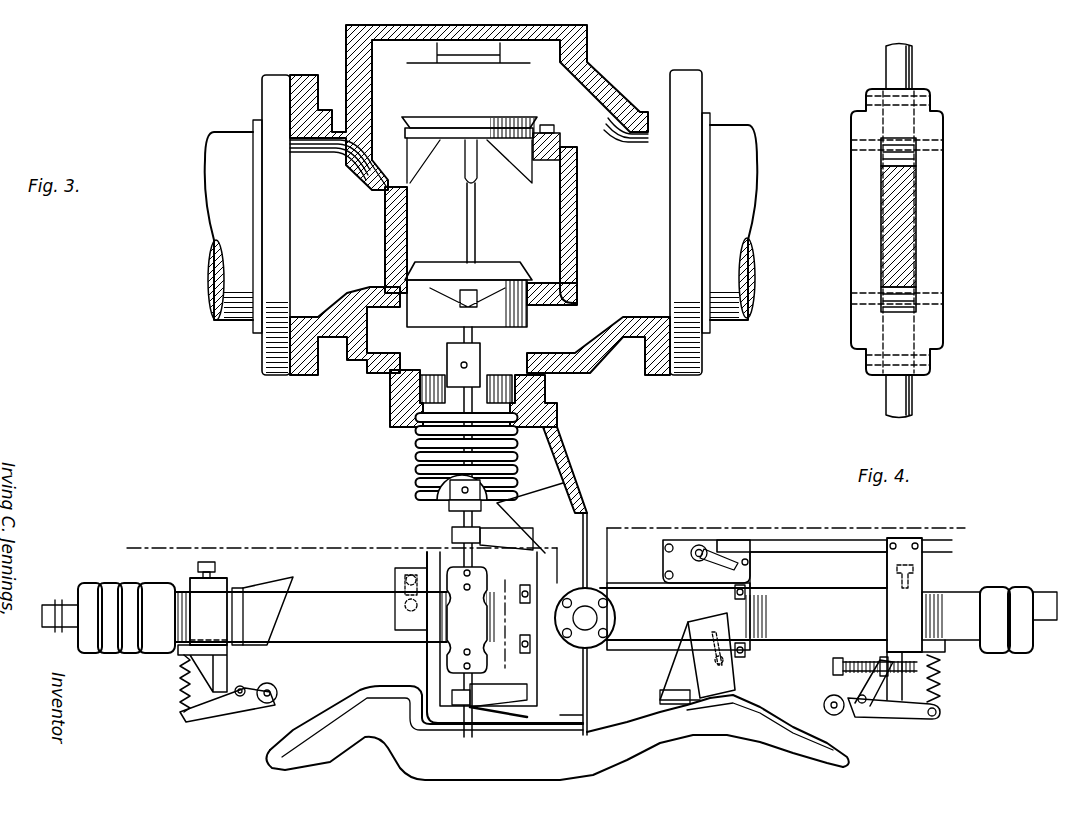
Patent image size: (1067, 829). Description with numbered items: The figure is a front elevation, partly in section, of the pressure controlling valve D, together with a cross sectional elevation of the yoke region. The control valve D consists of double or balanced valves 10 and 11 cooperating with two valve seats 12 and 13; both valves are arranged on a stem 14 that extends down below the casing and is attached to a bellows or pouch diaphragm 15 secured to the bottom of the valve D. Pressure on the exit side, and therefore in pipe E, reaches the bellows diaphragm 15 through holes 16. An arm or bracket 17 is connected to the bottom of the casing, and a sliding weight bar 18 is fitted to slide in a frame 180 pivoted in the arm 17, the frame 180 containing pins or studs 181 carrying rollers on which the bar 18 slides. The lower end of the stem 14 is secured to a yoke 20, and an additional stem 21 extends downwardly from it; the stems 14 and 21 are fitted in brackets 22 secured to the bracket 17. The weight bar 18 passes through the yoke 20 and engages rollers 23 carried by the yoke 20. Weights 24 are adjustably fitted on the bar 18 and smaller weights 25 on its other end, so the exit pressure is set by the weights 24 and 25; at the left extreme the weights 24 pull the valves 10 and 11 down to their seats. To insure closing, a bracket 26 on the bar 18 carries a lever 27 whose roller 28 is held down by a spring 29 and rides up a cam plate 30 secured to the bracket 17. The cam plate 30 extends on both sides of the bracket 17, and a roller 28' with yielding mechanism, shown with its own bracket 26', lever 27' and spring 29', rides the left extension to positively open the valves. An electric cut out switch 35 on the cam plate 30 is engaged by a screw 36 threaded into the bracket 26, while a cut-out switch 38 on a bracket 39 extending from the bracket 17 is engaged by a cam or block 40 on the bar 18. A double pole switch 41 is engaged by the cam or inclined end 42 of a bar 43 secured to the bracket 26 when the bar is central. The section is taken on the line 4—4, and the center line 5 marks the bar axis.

In FIG. 3, the pipe E is at (207, 183).
In FIG. 3, the control valve D is at (546, 334).
In FIG. 3, the valve 10 is at (513, 104).
In FIG. 3, the valve 11 is at (487, 264).
In FIG. 3, the valve seat 12 is at (542, 138).
In FIG. 3, the valve seat 13 is at (550, 285).
In FIG. 3, the stem 14 is at (478, 214).
In FIG. 4, the stem 14 is at (910, 68).
In FIG. 3, the bellows or pouch diaphragm 15 is at (422, 465).
In FIG. 3, the holes 16 is at (430, 392).
In FIG. 3, the arm or bracket 17 is at (560, 458).
In FIG. 3, the sliding weight bar 18 is at (531, 615).
In FIG. 4, the sliding weight bar 18 is at (890, 226).
In FIG. 3, the yoke 20 is at (450, 647).
In FIG. 4, the yoke 20 is at (935, 289).
In FIG. 3, the additional stem 21 is at (462, 733).
In FIG. 4, the additional stem 21 is at (898, 396).
In FIG. 3, the brackets 22 is at (452, 534).
In FIG. 4, the rollers 23 is at (918, 146).
In FIG. 3, the weights 24 is at (123, 644).
In FIG. 3, the smaller weights 25 is at (1003, 640).
In FIG. 3, the bracket 26 is at (933, 619).
In FIG. 3, the left bracket 26' is at (184, 626).
In FIG. 3, the lever 27 is at (894, 702).
In FIG. 3, the left lever 27' is at (203, 717).
In FIG. 3, the roller 28 is at (841, 716).
In FIG. 3, the roller 28' is at (274, 682).
In FIG. 3, the spring 29 is at (954, 678).
In FIG. 3, the left spring 29' is at (154, 683).
In FIG. 3, the cam plate 30 is at (305, 742).
In FIG. 3, the electric cut out switch 35 is at (717, 682).
In FIG. 3, the screw 36 is at (856, 665).
In FIG. 3, the cut-out switch 38 is at (398, 580).
In FIG. 3, the bracket 39 is at (513, 722).
In FIG. 3, the cam or block 40 is at (270, 577).
In FIG. 3, the double pole switch 41 is at (685, 538).
In FIG. 3, the cam or inclined end 42 is at (706, 548).
In FIG. 3, the bar 43 is at (818, 546).
In FIG. 3, the frame 180 is at (652, 616).
In FIG. 3, the pins or studs 181 is at (745, 592).
In FIG. 3, the housing 4 is at (505, 637).
In FIG. 3, the center line 5 is at (533, 550).